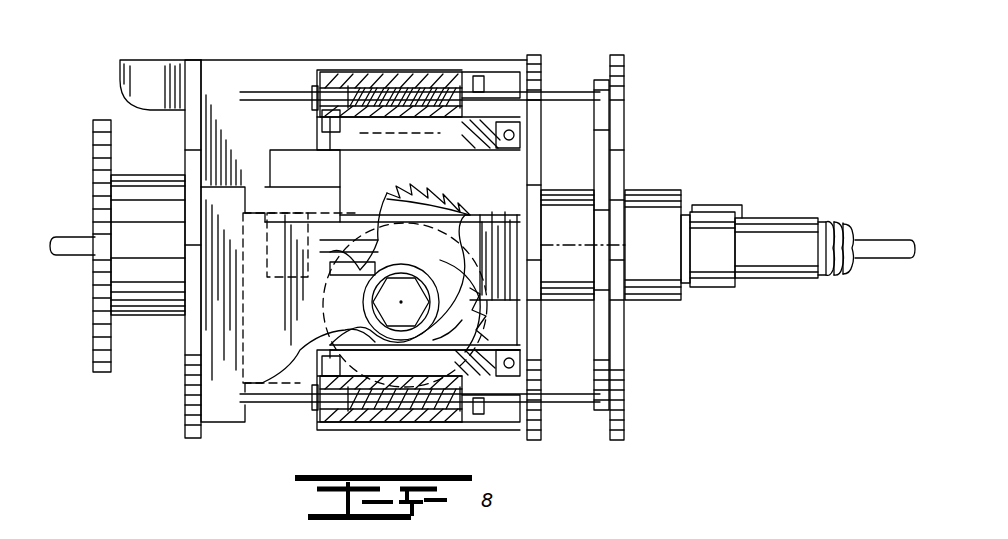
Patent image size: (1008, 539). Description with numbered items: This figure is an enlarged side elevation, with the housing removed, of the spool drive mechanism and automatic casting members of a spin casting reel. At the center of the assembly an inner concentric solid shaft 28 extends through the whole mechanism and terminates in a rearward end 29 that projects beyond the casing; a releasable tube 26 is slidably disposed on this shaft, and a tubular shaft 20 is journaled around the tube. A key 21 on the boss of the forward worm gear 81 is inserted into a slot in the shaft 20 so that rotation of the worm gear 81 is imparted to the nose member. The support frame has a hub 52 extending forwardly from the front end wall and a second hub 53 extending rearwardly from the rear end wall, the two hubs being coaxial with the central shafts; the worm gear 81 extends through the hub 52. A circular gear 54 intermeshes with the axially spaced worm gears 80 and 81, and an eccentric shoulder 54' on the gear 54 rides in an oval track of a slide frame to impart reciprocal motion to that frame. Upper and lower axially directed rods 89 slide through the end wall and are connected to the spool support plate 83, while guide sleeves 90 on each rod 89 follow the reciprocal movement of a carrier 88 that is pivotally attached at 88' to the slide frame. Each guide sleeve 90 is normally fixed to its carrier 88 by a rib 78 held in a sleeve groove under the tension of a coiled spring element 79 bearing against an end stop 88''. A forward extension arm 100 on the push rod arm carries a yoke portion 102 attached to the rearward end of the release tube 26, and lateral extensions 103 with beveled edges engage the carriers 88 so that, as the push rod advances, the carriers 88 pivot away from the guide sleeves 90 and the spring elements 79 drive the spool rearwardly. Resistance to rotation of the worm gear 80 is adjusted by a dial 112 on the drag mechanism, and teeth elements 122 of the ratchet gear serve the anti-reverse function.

The tubular shaft 20 is at (776, 220).
The key 21 is at (708, 205).
The releasable tube 26 is at (362, 230).
The inner concentric solid shaft 28 is at (870, 242).
The rearward end 29 is at (62, 252).
The hub 52 is at (645, 190).
The second hub 53 is at (140, 318).
The circular gear 54 is at (463, 302).
The eccentric shoulder 54' is at (502, 308).
The rib 78 is at (315, 70).
The coiled spring element 79 is at (395, 70).
The worm gear 80 is at (298, 205).
The worm gear 81 is at (480, 218).
The spool support plate 83 is at (598, 80).
The carrier 88 is at (493, 408).
The pivotal attachment 88' is at (536, 134).
The end stop 88'' is at (491, 63).
The rod 89 is at (255, 92).
The guide sleeve 90 is at (345, 70).
The forward extension arm 100 is at (290, 175).
The yoke portion 102 is at (332, 270).
The lateral extension 103 is at (318, 131).
The dial 112 is at (93, 326).
The teeth elements 122 is at (418, 196).